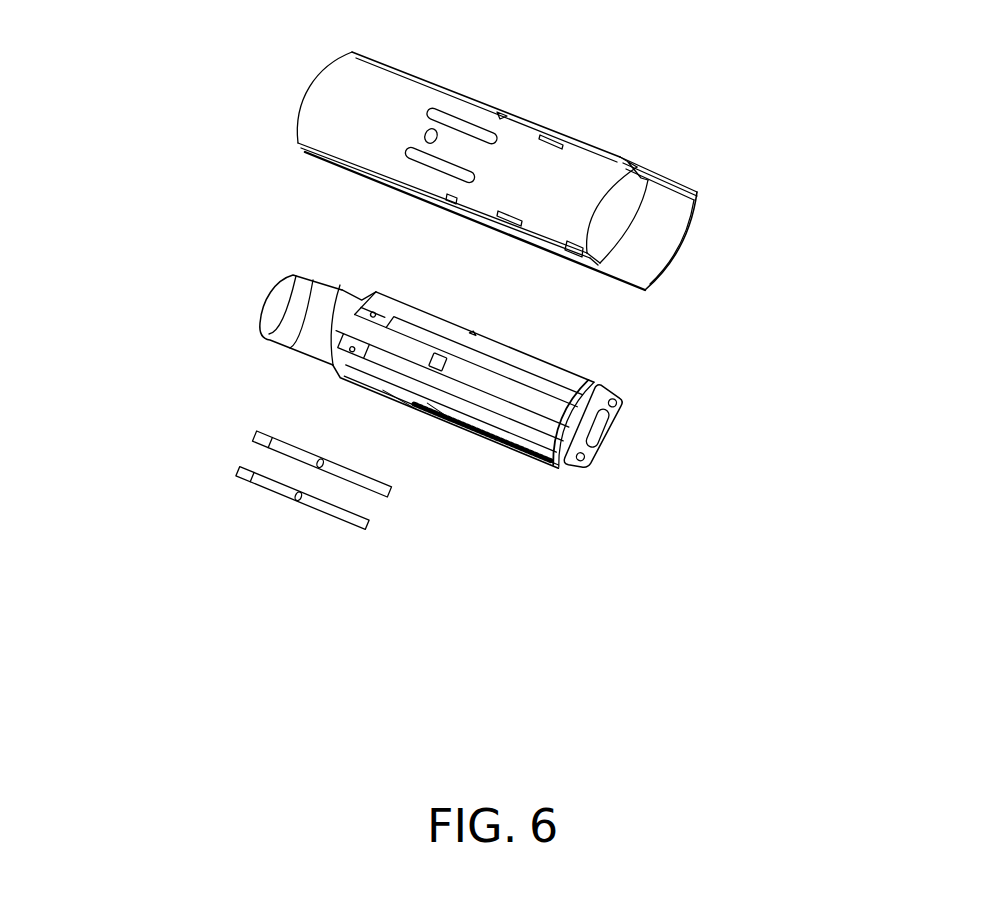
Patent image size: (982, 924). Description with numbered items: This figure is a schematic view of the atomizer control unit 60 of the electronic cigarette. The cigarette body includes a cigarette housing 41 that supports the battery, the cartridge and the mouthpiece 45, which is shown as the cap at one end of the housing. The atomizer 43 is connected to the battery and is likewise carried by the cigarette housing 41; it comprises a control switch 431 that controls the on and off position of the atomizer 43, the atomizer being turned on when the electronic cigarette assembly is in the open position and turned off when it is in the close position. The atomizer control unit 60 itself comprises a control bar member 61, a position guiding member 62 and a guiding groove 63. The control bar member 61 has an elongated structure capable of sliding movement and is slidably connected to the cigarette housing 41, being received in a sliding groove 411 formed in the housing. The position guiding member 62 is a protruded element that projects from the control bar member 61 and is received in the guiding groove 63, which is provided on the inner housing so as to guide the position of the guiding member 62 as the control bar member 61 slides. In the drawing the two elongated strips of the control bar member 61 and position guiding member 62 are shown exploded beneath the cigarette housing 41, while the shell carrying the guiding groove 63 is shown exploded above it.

The cigarette housing 41 is at (438, 366).
The sliding groove 411 is at (543, 380).
The atomizer 43 is at (402, 315).
The control switch 431 is at (373, 313).
The mouthpiece 45 is at (284, 330).
The atomizer control unit 60 is at (396, 567).
The control bar member 61 is at (392, 488).
The position guiding member 62 is at (299, 498).
The guiding groove 63 is at (467, 122).